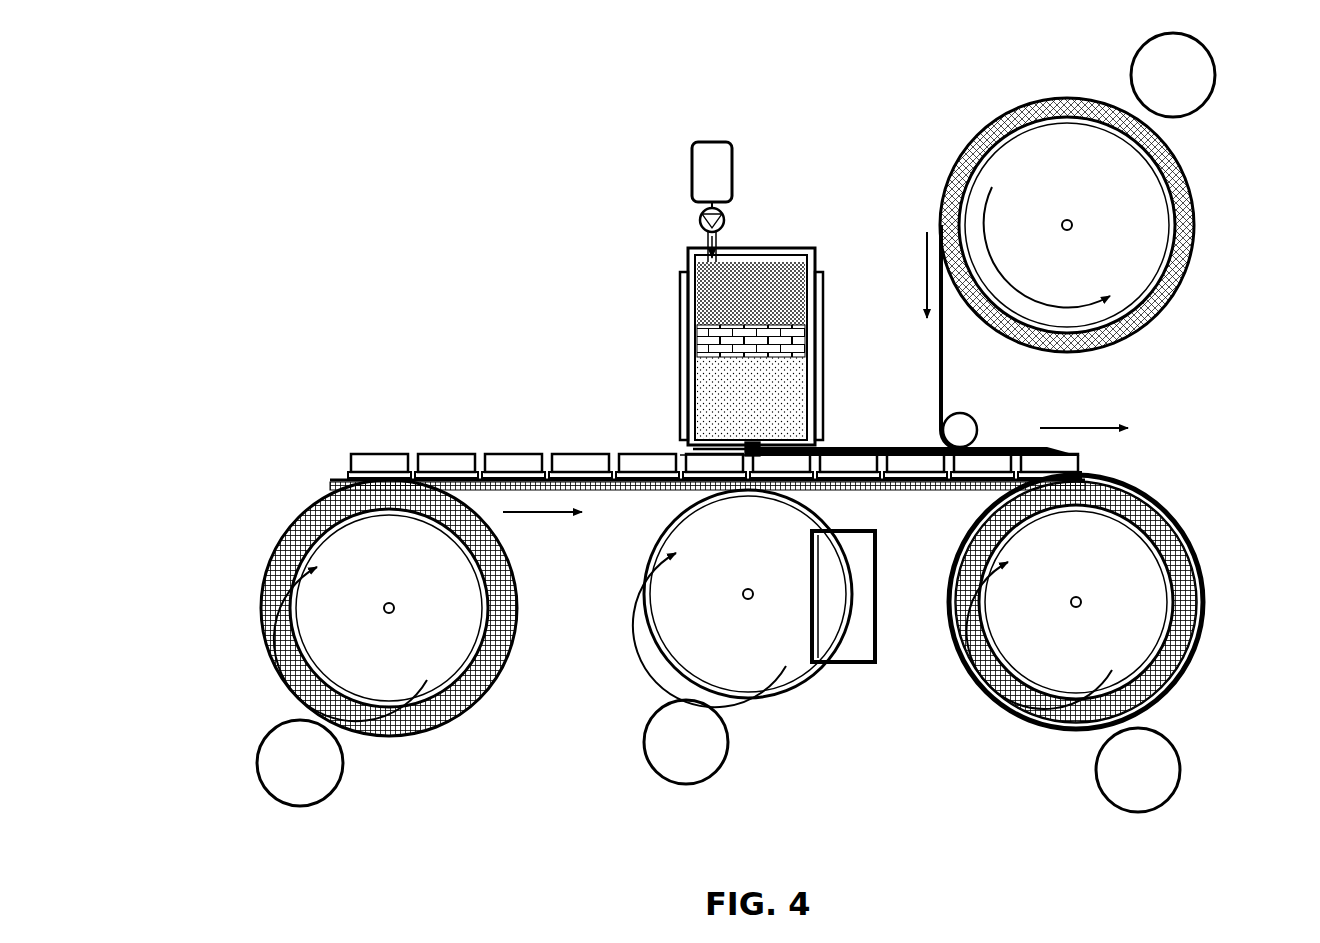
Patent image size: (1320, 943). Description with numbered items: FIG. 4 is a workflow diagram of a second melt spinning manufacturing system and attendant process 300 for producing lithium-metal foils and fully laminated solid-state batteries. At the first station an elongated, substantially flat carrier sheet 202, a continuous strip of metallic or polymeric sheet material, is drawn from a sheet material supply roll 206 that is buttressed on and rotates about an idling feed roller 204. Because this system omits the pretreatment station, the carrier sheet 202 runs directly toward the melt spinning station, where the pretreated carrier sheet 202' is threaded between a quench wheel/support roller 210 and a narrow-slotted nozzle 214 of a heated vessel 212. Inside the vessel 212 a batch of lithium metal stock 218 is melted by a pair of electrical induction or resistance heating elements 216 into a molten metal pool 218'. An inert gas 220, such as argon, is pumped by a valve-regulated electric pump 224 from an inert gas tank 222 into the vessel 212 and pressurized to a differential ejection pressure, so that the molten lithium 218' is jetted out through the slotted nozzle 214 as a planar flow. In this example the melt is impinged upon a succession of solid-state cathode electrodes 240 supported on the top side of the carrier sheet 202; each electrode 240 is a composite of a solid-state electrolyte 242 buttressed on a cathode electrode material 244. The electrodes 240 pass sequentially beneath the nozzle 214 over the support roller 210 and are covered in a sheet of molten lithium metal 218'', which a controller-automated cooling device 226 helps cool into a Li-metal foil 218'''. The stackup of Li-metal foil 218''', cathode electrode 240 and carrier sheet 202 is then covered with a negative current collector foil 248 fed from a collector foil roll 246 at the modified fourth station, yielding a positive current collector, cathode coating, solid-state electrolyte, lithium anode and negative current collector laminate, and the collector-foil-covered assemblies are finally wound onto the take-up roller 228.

The manufacturing system and manufacturing process 300 is at (286, 97).
The carrier sheet 202 is at (697, 419).
The pretreated carrier sheet 202' is at (644, 432).
The idling feed roller 204 is at (338, 512).
The sheet material supply roll 206 is at (290, 527).
The quench wheel/support roller 210 is at (668, 668).
The heated vessel 212 is at (793, 248).
The slotted nozzle 214 is at (690, 449).
The heating elements 216 is at (680, 300).
The lithium metal stock 218 is at (806, 342).
The molten lithium metal 218' is at (704, 386).
The sheet of molten lithium metal 218'' is at (817, 425).
The Li-metal foil 218''' is at (920, 408).
The inert gas 220 is at (710, 266).
The inert gas tank 222 is at (697, 141).
The electric pump 224 is at (700, 220).
The cooling device 226 is at (857, 663).
The take-up roller 228 is at (1168, 505).
The solid-state cathode electrodes 240 is at (378, 454).
The solid-state electrolyte 242 is at (353, 468).
The cathode electrode material 244 is at (347, 478).
The collector foil roll 246 is at (1152, 160).
The negative current collector foil 248 is at (1020, 447).